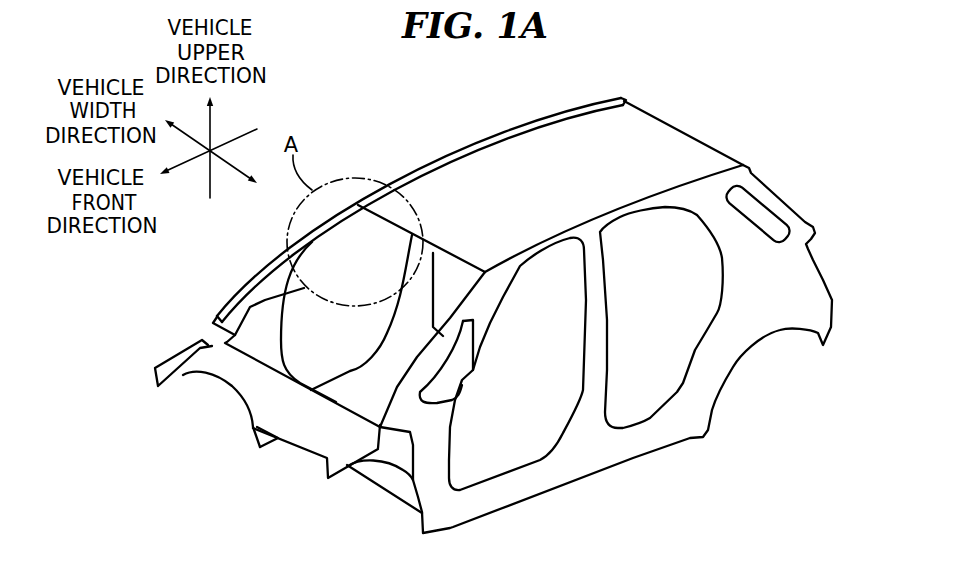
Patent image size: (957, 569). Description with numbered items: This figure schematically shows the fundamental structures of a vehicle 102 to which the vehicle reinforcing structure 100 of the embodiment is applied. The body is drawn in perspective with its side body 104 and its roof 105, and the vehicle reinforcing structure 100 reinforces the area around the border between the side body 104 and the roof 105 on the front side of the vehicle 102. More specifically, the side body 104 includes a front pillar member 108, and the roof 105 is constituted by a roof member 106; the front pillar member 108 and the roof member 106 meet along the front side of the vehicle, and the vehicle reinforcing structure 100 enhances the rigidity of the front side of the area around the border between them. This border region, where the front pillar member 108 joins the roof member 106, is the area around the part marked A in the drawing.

The vehicle reinforcing structure 100 is at (350, 192).
The vehicle 102 is at (671, 108).
The side body 104 is at (221, 298).
The roof 105 is at (545, 146).
The roof member 106 is at (439, 180).
The front pillar member 108 is at (277, 257).